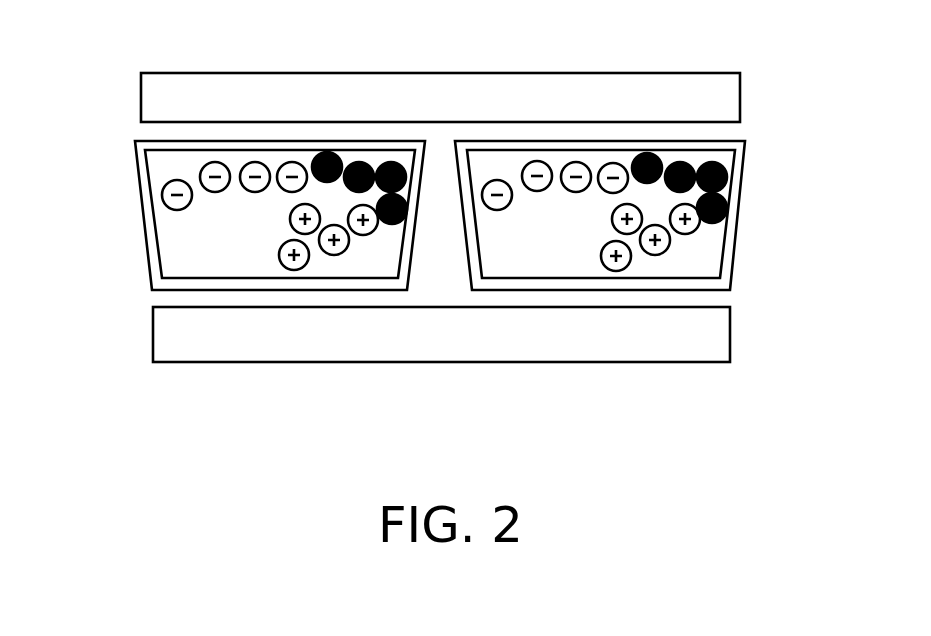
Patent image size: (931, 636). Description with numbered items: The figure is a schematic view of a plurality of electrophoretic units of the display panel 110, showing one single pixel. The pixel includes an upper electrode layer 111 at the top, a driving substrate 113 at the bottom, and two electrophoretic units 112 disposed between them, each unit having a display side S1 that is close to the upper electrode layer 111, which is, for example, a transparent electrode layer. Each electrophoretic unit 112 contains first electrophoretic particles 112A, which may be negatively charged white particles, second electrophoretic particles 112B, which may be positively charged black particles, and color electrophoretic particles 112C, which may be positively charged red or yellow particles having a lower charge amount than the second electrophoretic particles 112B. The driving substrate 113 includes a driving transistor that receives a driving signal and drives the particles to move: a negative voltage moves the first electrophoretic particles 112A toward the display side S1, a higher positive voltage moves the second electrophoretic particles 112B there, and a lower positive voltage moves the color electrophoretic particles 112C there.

The display panel 110 is at (449, 218).
The upper electrode layer 111 is at (740, 100).
The electrophoretic unit 112 is at (745, 143).
The first electrophoretic particles 112A is at (162, 197).
The second electrophoretic particles 112B is at (289, 262).
The color electrophoretic particles 112C is at (340, 155).
The driving substrate 113 is at (730, 340).
The display side S1 is at (172, 157).